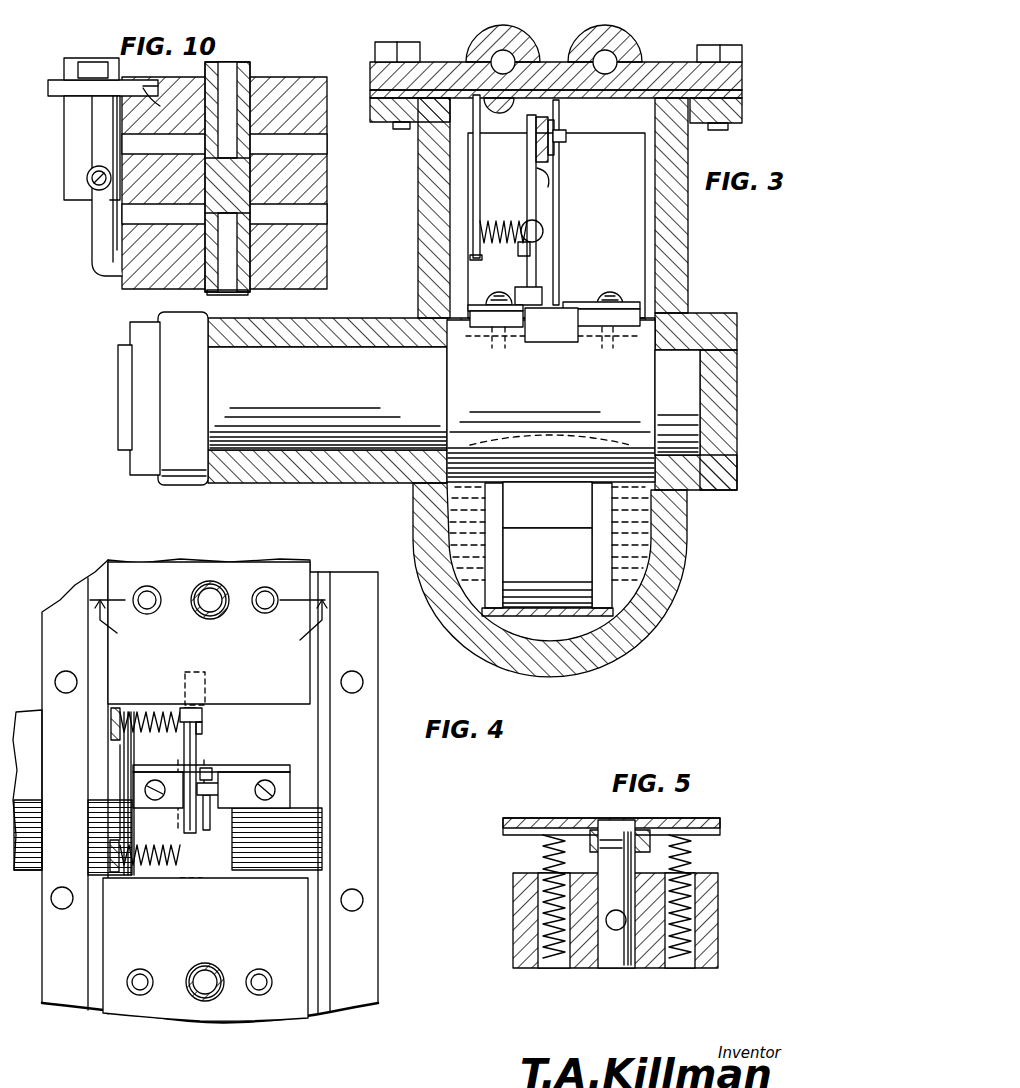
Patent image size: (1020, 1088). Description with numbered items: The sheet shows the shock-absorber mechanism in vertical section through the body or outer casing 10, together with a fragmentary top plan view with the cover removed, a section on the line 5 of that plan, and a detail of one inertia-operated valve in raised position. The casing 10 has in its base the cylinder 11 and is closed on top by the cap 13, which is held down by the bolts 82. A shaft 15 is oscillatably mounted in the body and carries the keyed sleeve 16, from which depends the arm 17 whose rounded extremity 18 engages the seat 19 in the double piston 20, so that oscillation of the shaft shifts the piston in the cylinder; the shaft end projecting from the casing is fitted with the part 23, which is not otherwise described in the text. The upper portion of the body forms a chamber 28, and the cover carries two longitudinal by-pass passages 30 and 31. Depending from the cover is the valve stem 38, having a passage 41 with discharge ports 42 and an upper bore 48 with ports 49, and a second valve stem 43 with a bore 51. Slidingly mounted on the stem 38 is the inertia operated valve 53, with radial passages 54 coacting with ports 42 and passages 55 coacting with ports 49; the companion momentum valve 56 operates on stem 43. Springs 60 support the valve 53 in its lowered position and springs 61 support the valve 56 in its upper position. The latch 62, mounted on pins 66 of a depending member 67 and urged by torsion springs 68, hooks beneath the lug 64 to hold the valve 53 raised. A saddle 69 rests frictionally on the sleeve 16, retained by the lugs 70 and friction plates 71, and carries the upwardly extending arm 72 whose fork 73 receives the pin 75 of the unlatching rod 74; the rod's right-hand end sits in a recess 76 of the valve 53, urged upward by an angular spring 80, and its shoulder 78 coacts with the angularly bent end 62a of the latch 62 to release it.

In FIG. 4, the section line 5— 5 is at (208, 631).
In FIG. 3, the body or outer casing 10 is at (688, 235).
In FIG. 4, the body or outer casing 10 is at (378, 640).
In FIG. 3, the cylinder 11 is at (640, 557).
In FIG. 3, the cap or cover 13 is at (677, 78).
In FIG. 5, the cap or cover 13 is at (700, 818).
In FIG. 3, the shaft 15 is at (327, 398).
In FIG. 4, the shaft 15 is at (27, 790).
In FIG. 3, the sleeve 16 is at (573, 401).
In FIG. 4, the sleeve 16 is at (318, 785).
In FIG. 3, the arm 17 is at (547, 508).
In FIG. 3, the rounded extremity 18 is at (547, 567).
In FIG. 3, the seat 19 is at (605, 570).
In FIG. 3, the double piston 20 is at (398, 531).
In FIG. 3, the end cap 23 is at (185, 312).
In FIG. 3, the chamber 28 is at (596, 202).
In FIG. 3, the by-pass passage 30 is at (612, 60).
In FIG. 3, the by-pass passage 31 is at (500, 60).
In FIG. 10, the valve stem 38 is at (240, 70).
In FIG. 4, the valve stem 38 is at (210, 582).
In FIG. 5, the valve stem 38 is at (632, 966).
In FIG. 10, the passage 41 is at (215, 275).
In FIG. 10, the discharge ports 42 is at (218, 238).
In FIG. 4, the valve stem 43 is at (204, 968).
In FIG. 10, the bore 48 is at (240, 98).
In FIG. 4, the bore 48 is at (215, 600).
In FIG. 10, the ports 49 is at (245, 150).
In FIG. 5, the ports 49 is at (613, 930).
In FIG. 4, the bore 51 is at (207, 998).
In FIG. 10, the inertia operated valve 53 is at (328, 188).
In FIG. 3, the inertia operated valve 53 is at (622, 230).
In FIG. 4, the inertia operated valve 53 is at (209, 633).
In FIG. 5, the inertia operated valve 53 is at (513, 924).
In FIG. 10, the radially extending passages 54 is at (122, 212).
In FIG. 10, the radially extending passages 55 is at (140, 143).
In FIG. 4, the momentum or inertia operated valve 56 is at (205, 949).
In FIG. 4, the springs 60 is at (147, 588).
In FIG. 5, the springs 60 is at (545, 852).
In FIG. 4, the springs 61 is at (140, 996).
In FIG. 10, the latch 62 is at (92, 216).
In FIG. 3, the latch 62 is at (527, 193).
In FIG. 4, the latch 62 is at (191, 796).
In FIG. 10, the angularly bent end 62a is at (104, 72).
In FIG. 3, the angularly bent end 62a is at (537, 118).
In FIG. 4, the angularly bent end 62a is at (200, 710).
In FIG. 10, the lug 64 is at (112, 265).
In FIG. 3, the lug 64 is at (542, 290).
In FIG. 3, the pins 66 is at (537, 224).
In FIG. 4, the pins 66 is at (125, 822).
In FIG. 10, the depending member 67 is at (72, 183).
In FIG. 4, the depending member 67 is at (110, 735).
In FIG. 3, the torsion springs 68 is at (480, 232).
In FIG. 4, the torsion springs 68 is at (150, 715).
In FIG. 3, the saddle 69 is at (568, 343).
In FIG. 4, the saddle 69 is at (225, 740).
In FIG. 3, the lugs 70 is at (470, 315).
In FIG. 4, the lugs 70 is at (290, 814).
In FIG. 3, the friction plates 71 is at (498, 300).
In FIG. 4, the friction plates 71 is at (262, 810).
In FIG. 3, the arm 72 is at (550, 178).
In FIG. 3, the fork 73 is at (558, 128).
In FIG. 4, the fork 73 is at (207, 768).
In FIG. 10, the unlatching rod 74 is at (58, 96).
In FIG. 3, the unlatching rod 74 is at (540, 137).
In FIG. 4, the unlatching rod 74 is at (190, 752).
In FIG. 3, the pin 75 is at (566, 140).
In FIG. 4, the pin 75 is at (222, 785).
In FIG. 10, the recess 76 is at (150, 95).
In FIG. 10, the shoulder 78 is at (92, 72).
In FIG. 4, the shoulder 78 is at (203, 730).
In FIG. 3, the angular spring 80 is at (541, 187).
In FIG. 3, the bolts 82 is at (735, 52).